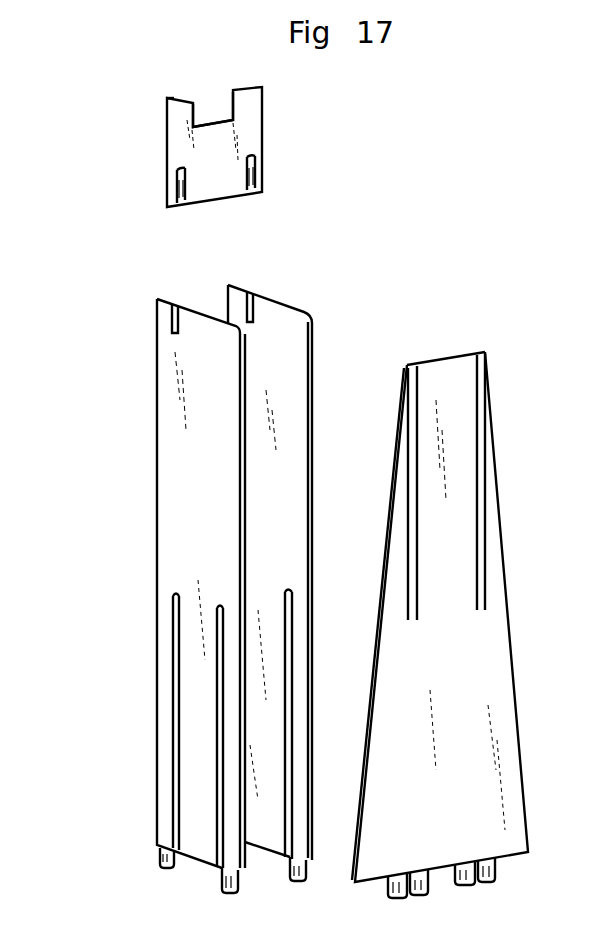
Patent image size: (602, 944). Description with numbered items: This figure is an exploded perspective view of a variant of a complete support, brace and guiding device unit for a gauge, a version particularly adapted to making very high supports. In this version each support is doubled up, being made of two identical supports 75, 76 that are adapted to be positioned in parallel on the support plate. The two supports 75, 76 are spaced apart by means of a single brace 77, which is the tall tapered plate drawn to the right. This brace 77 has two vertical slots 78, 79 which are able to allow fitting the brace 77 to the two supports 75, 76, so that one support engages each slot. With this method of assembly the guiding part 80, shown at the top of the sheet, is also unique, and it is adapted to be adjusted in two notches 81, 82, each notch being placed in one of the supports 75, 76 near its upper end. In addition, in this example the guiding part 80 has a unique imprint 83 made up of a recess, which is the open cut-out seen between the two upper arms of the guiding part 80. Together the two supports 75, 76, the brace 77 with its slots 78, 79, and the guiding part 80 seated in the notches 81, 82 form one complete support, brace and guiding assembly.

The support 75 is at (178, 438).
The support 76 is at (280, 435).
The brace 77 is at (483, 773).
The vertical slot 78 is at (412, 527).
The vertical slot 79 is at (478, 505).
The guiding part 80 is at (177, 107).
The notch 81 is at (175, 318).
The notch 82 is at (273, 305).
The imprint 83 is at (213, 110).